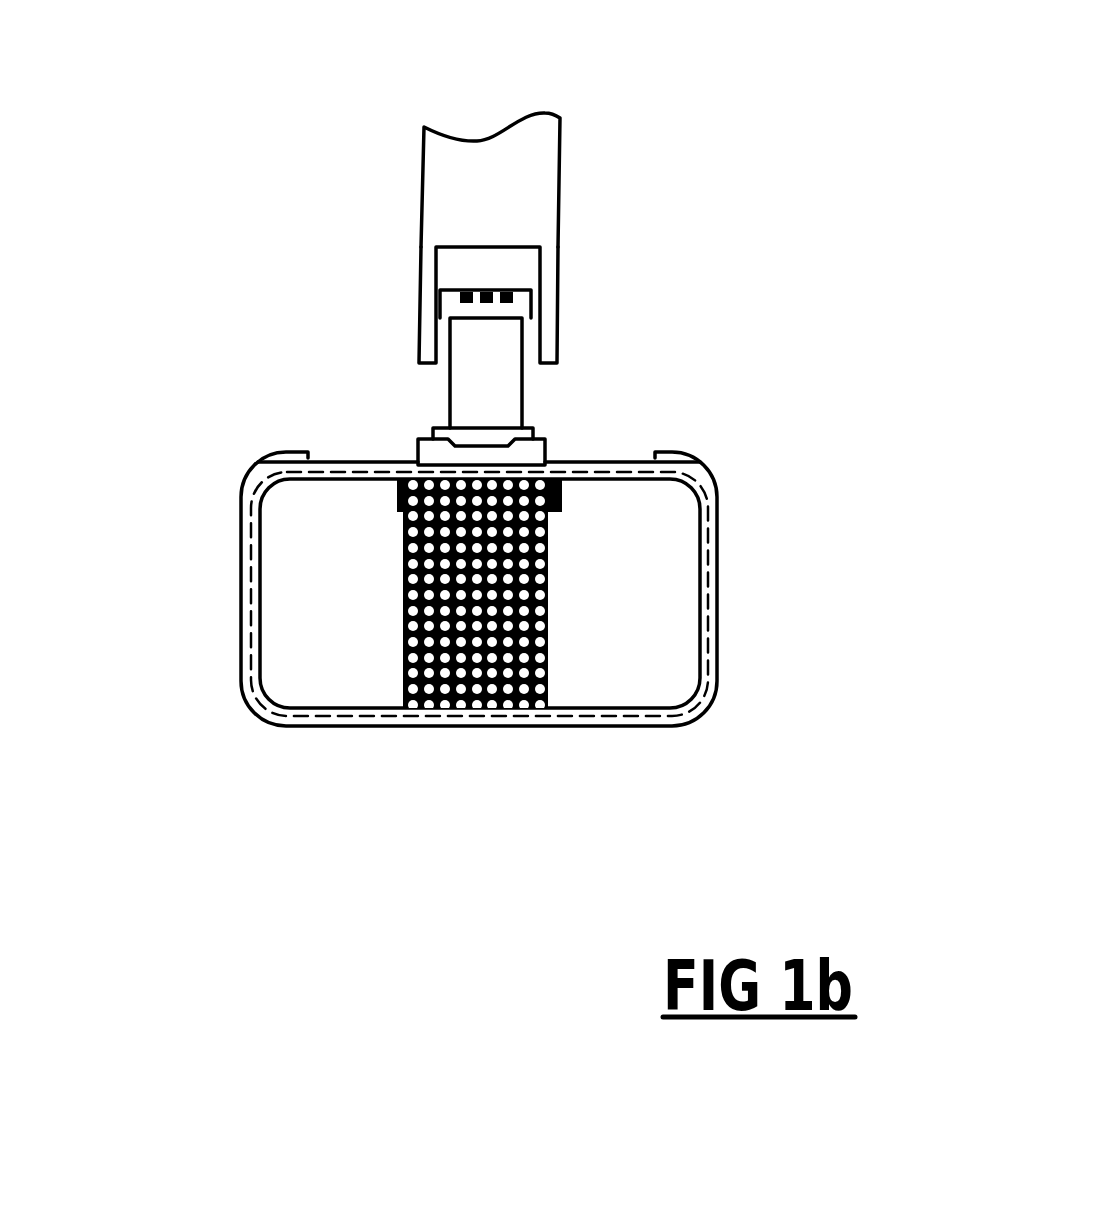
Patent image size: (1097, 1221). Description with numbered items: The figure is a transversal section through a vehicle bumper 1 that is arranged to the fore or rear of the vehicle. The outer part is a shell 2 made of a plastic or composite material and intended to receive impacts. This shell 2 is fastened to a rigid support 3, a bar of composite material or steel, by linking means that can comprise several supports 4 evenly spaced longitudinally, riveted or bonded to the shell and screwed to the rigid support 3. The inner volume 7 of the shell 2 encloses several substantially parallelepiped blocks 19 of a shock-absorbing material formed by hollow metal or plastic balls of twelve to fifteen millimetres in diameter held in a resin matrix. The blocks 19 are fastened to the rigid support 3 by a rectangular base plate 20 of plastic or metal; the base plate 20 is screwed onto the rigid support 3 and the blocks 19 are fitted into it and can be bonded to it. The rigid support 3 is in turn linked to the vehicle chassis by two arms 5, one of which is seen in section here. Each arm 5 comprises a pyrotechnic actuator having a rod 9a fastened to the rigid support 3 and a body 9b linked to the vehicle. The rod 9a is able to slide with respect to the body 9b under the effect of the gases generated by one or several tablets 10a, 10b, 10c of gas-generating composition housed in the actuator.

The bumper 1 is at (303, 777).
The shell 2 is at (703, 692).
The rigid support 3 is at (515, 458).
The supports 4 is at (368, 460).
The arms 5 is at (370, 120).
The inner volume 7 is at (300, 590).
The rod 9a is at (485, 388).
The body 9b is at (558, 272).
The tablet of gas-generating composition 10a is at (463, 292).
The tablet of gas-generating composition 10b is at (483, 293).
The tablet of gas-generating composition 10c is at (507, 293).
The blocks 19 is at (548, 728).
The base plate 20 is at (398, 500).